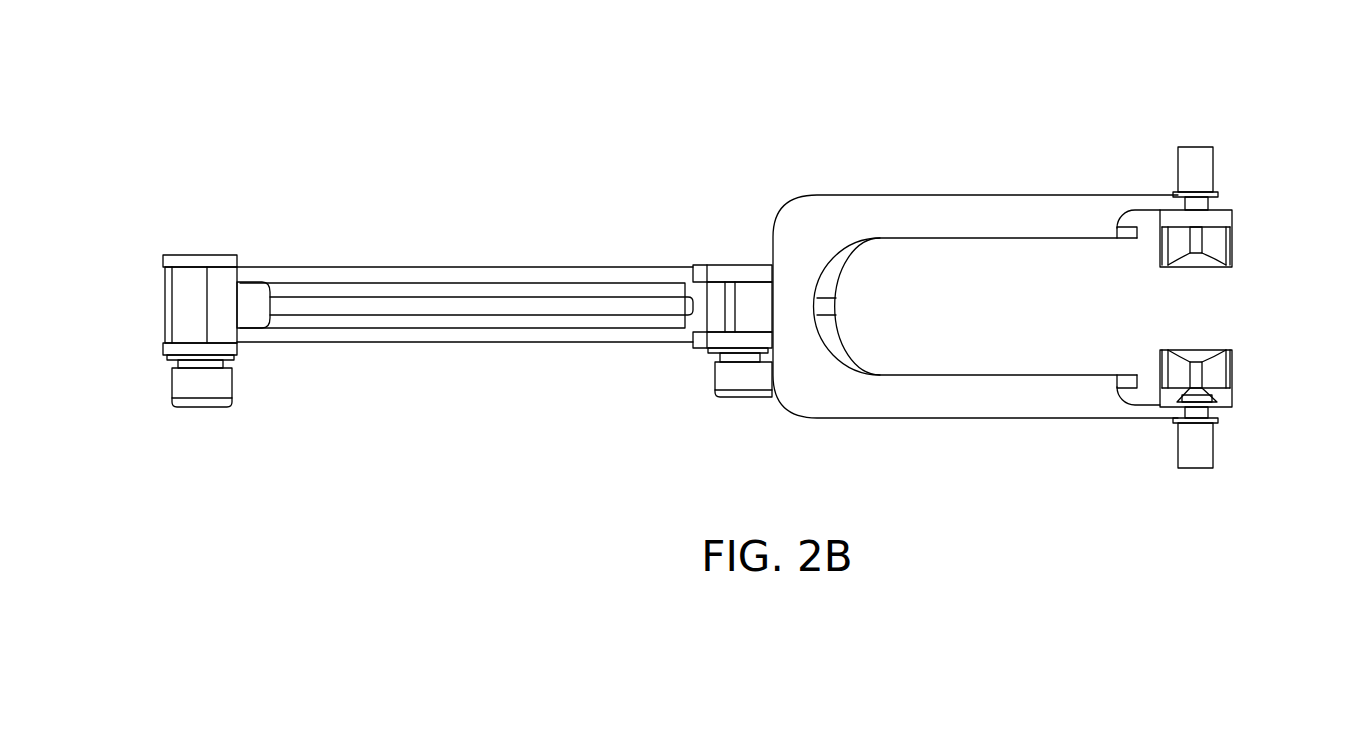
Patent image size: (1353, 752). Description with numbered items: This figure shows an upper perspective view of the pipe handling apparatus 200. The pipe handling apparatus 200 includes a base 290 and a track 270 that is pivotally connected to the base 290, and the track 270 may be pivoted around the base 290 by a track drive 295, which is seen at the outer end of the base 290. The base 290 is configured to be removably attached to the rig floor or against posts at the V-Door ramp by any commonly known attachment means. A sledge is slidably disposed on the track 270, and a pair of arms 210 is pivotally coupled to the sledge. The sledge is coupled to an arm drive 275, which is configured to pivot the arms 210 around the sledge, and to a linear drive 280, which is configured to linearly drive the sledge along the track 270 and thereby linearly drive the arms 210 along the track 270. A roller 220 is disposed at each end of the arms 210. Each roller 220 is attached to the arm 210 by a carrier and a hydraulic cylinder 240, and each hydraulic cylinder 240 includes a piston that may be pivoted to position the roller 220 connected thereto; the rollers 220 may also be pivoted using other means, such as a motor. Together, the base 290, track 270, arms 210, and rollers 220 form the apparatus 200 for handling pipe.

The pipe handling apparatus 200 is at (1018, 53).
The arms 210 is at (1008, 195).
The roller 220 is at (1177, 260).
The hydraulic cylinder 240 is at (1213, 160).
The track 270 is at (397, 343).
The arm drive 275 is at (743, 397).
The linear drive 280 is at (255, 302).
The base 290 is at (200, 255).
The track drive 295 is at (172, 382).